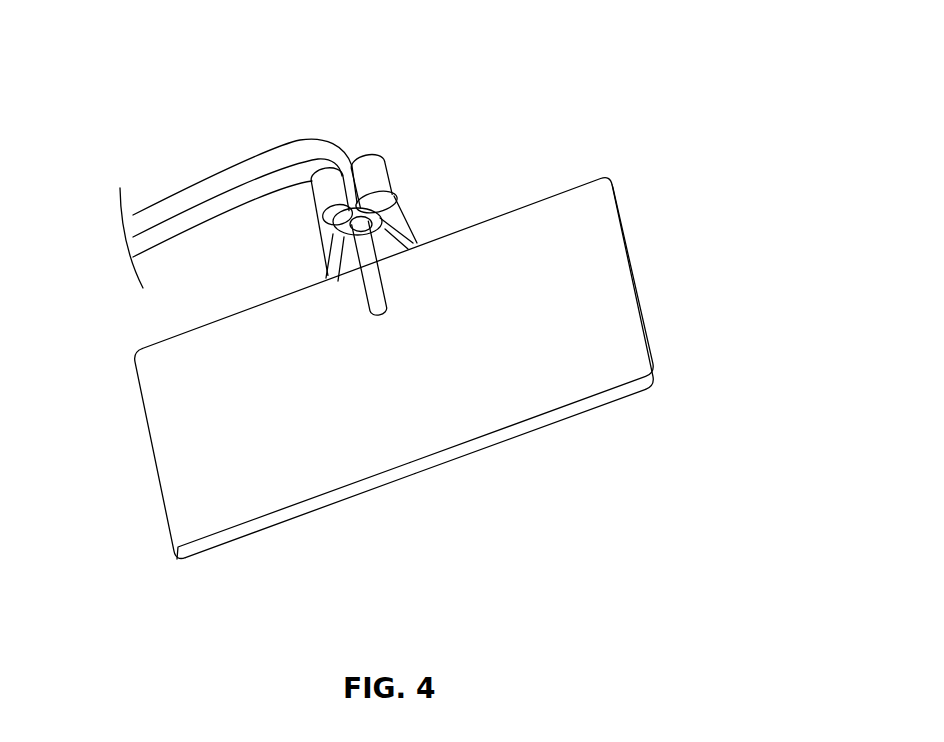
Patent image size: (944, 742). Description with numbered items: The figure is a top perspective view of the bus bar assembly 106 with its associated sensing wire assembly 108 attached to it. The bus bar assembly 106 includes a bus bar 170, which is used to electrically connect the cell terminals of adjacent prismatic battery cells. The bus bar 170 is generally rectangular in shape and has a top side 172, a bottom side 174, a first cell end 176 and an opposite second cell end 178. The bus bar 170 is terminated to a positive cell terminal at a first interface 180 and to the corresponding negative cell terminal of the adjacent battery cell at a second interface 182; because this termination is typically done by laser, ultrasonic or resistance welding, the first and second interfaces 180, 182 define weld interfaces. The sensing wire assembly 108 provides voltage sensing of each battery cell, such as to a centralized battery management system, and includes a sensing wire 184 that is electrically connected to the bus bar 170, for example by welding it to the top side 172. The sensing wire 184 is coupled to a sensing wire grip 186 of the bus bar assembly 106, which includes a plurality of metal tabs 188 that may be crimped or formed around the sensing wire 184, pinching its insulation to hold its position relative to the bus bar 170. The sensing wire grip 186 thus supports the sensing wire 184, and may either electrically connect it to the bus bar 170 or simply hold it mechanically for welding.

The bus bar assembly 106 is at (531, 50).
The sensing wire assembly 108 is at (346, 130).
The bus bar 170 is at (631, 257).
The top side 172 is at (197, 447).
The bottom side 174 is at (421, 474).
The first cell end 176 is at (243, 539).
The second cell end 178 is at (596, 401).
The first interface 180 is at (321, 520).
The second interface 182 is at (520, 444).
The sensing wire 184 is at (208, 177).
The sensing wire grip 186 is at (391, 153).
The metal tabs 188 is at (402, 209).